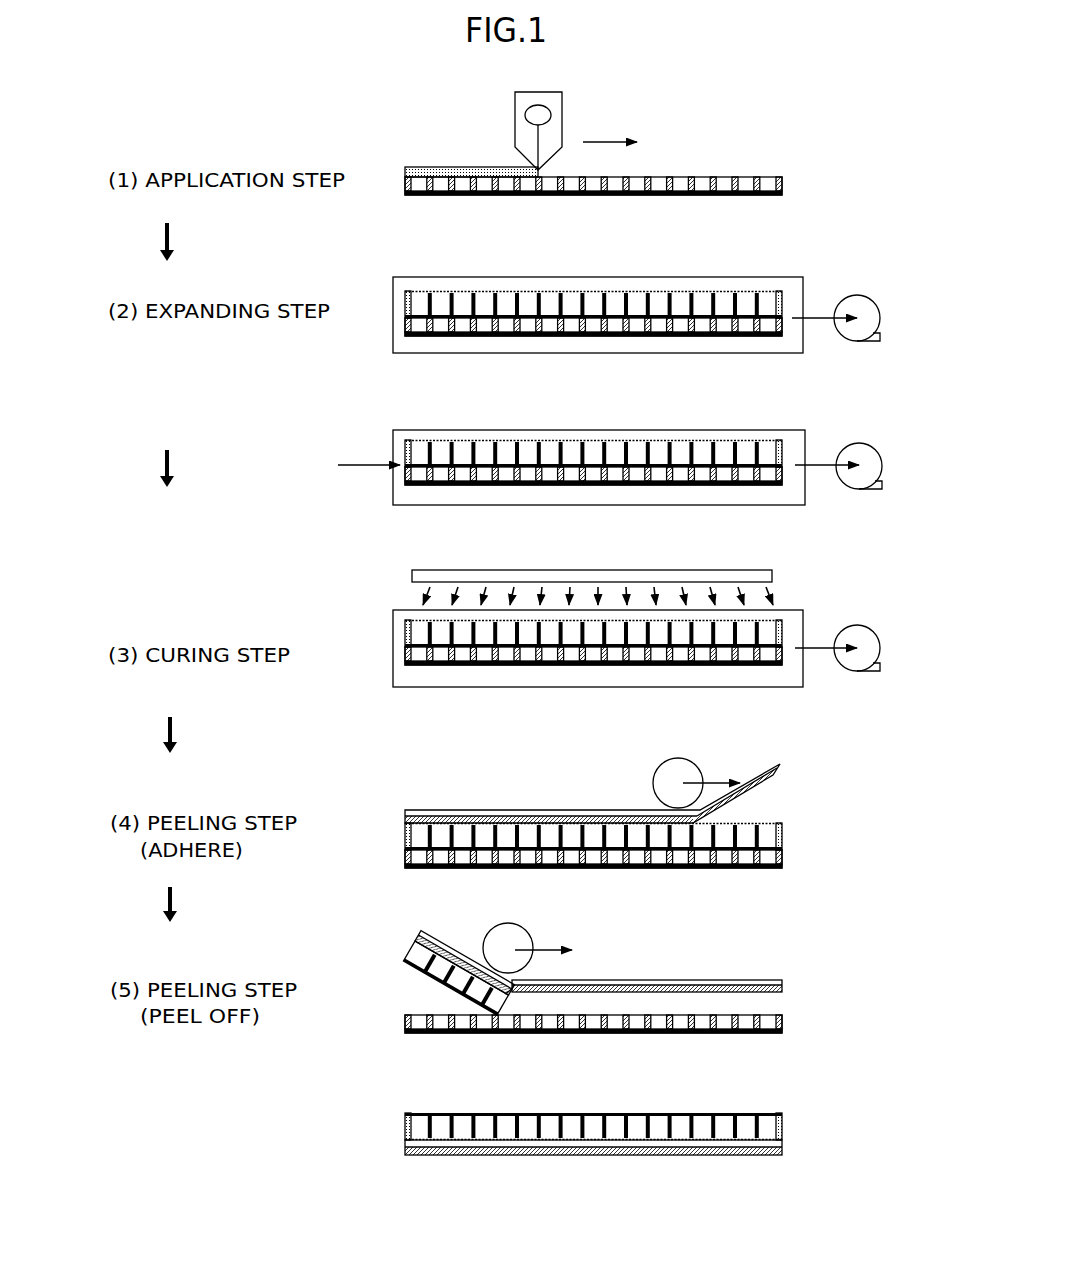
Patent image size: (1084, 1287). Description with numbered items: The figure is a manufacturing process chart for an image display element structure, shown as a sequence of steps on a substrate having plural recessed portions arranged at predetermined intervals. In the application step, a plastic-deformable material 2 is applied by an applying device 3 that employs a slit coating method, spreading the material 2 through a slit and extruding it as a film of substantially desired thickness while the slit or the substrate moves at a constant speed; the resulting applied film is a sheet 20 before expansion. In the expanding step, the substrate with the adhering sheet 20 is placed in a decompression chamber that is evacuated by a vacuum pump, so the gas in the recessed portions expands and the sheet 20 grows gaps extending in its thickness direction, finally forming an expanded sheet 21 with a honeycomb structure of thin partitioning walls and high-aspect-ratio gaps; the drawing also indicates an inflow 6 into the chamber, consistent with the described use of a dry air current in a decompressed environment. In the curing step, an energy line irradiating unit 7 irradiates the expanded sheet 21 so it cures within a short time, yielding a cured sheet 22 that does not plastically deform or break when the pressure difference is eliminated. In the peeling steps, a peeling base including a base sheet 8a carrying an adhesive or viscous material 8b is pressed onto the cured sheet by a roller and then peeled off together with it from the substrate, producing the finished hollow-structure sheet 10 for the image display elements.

The material 2 is at (527, 112).
The applying device 3 is at (557, 130).
The gas introduction 6 is at (370, 462).
The energy line irradiating unit 7 is at (418, 570).
The base sheet 8a is at (495, 812).
The adhesive or viscous material 8b is at (465, 810).
The porous structure product 10 is at (566, 1137).
The sheet 20 is at (405, 167).
The expanded sheet 21 is at (405, 300).
The cured sheet 22 is at (405, 440).